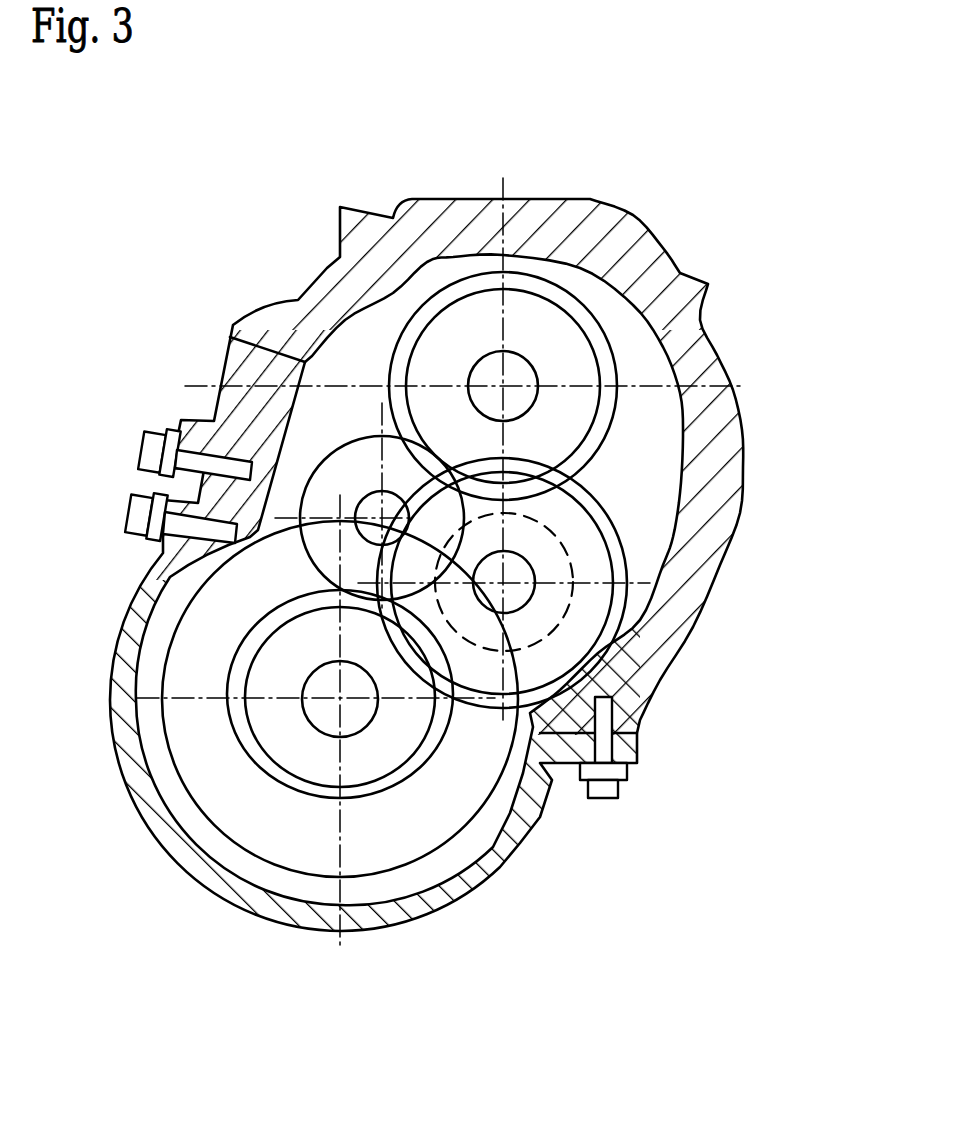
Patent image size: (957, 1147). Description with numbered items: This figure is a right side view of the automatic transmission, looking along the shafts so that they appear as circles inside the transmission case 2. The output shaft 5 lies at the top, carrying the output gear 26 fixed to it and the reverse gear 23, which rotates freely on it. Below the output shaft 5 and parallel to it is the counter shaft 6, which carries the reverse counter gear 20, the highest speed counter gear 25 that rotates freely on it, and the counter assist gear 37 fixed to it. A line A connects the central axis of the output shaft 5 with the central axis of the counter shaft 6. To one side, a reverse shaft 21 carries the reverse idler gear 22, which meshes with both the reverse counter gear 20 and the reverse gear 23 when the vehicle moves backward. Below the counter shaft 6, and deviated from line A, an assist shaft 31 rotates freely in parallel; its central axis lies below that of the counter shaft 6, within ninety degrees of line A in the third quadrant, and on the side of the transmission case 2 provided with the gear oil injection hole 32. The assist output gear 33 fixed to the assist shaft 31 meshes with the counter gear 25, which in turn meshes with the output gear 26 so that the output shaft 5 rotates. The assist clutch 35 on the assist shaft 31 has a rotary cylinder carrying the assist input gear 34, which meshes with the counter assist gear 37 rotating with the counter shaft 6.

The transmission case 2 is at (665, 243).
The output shaft 5 is at (523, 372).
The counter shaft 6 is at (513, 567).
The reverse counter gear 20 is at (557, 565).
The reverse shaft 21 is at (298, 409).
The reverse idler gear 22 is at (367, 450).
The reverse gear 23 is at (600, 427).
The counter gear 25 is at (597, 653).
The output gear 26 is at (603, 377).
The assist shaft 31 is at (355, 710).
The gear oil injection hole 32 is at (222, 357).
The assist output gear 33 is at (302, 776).
The assist input gear 34 is at (258, 765).
The assist clutch 35 is at (188, 747).
The counter assist gear 37 is at (587, 618).
The line A is at (508, 186).